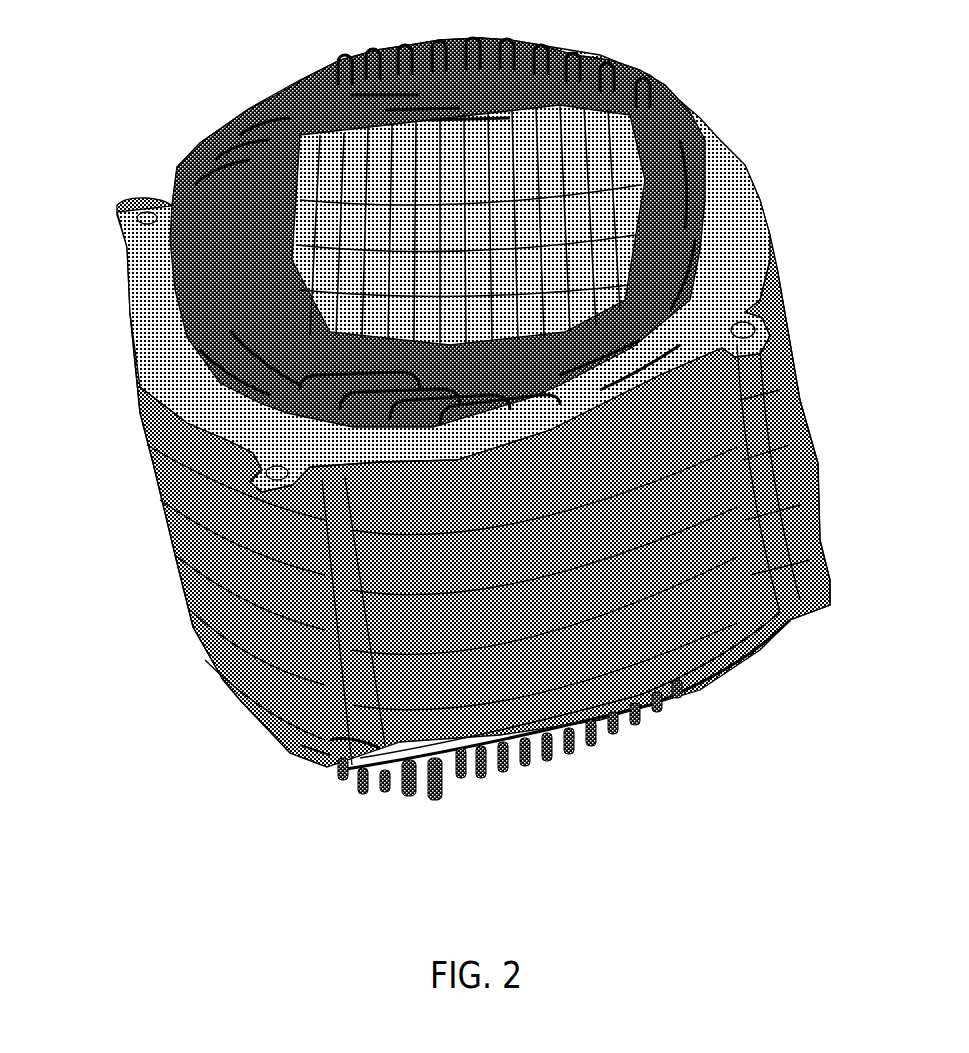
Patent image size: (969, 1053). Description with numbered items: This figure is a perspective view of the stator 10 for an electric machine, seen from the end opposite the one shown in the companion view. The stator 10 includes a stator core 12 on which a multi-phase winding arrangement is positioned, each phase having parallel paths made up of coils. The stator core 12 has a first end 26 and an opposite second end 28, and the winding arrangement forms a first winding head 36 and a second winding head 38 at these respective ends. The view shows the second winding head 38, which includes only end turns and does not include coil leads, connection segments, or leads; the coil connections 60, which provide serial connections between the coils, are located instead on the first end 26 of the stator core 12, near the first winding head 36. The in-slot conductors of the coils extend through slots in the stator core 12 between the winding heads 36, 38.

The stator 10 is at (790, 105).
The stator core 12 is at (777, 270).
The first end 26 is at (213, 663).
The second end 28 is at (147, 337).
The first winding head 36 is at (663, 753).
The second winding head 38 is at (218, 110).
The coil connections 60 is at (777, 647).